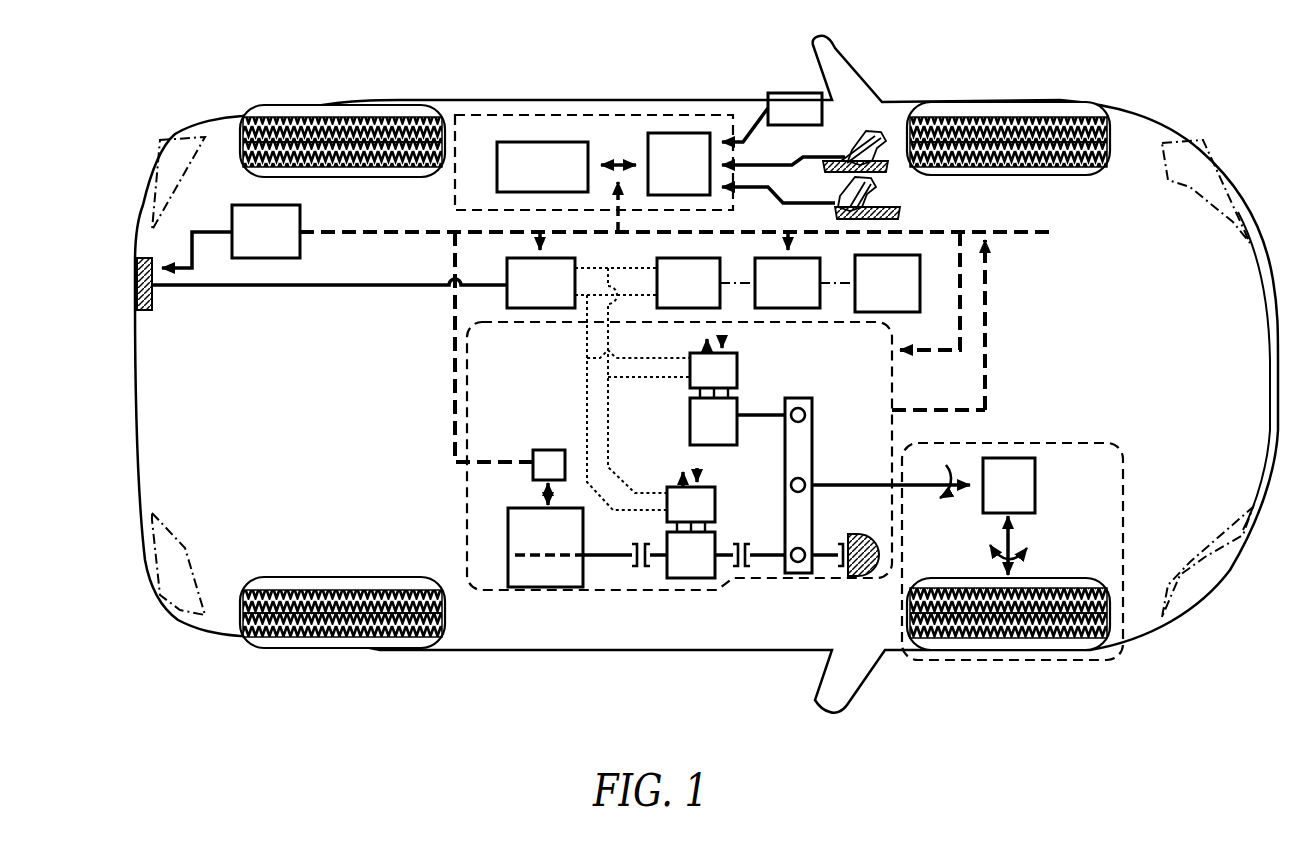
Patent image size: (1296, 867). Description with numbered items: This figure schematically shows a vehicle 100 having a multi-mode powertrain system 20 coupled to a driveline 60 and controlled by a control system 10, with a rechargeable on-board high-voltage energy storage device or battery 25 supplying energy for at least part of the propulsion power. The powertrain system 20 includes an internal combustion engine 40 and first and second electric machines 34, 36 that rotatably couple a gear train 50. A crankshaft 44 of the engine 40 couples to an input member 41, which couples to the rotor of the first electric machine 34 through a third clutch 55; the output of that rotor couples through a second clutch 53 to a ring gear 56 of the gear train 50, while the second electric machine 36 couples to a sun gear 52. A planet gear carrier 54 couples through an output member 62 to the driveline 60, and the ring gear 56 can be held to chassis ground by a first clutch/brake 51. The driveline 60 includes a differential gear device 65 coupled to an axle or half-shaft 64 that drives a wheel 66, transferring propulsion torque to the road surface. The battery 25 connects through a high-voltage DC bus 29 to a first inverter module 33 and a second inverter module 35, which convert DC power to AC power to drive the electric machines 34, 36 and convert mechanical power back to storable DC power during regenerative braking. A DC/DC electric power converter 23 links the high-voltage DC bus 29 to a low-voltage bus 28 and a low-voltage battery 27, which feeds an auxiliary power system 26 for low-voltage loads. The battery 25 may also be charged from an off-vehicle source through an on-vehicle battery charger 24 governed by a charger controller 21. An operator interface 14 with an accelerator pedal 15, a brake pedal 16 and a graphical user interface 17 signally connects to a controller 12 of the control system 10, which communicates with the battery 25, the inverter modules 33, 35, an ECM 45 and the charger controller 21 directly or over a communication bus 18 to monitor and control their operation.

The vehicle 100 is at (706, 374).
The control system 10 is at (594, 162).
The controller 12 is at (542, 167).
The operator interface 14 is at (655, 164).
The accelerator pedal 15 is at (838, 200).
The brake pedal 16 is at (848, 156).
The graphical user interface 17 is at (772, 117).
The communication bus 18 is at (378, 222).
The multi-mode powertrain system 20 is at (901, 371).
The charger controller 21 is at (266, 231).
The DC/DC electric power converter 23 is at (688, 283).
The on-vehicle battery charger 24 is at (137, 268).
The high-voltage energy storage device 25 is at (541, 283).
The auxiliary power system 26 is at (887, 283).
The low-voltage battery 27 is at (787, 283).
The low-voltage bus 28 is at (731, 280).
The high-voltage DC bus 29 is at (646, 293).
The first inverter module 33 is at (718, 512).
The first electric machine 34 is at (686, 580).
The second inverter module 35 is at (740, 372).
The second electric machine 36 is at (722, 447).
The internal combustion engine 40 is at (592, 576).
The input member 41 is at (646, 569).
The crankshaft 44 is at (548, 553).
The ECM 45 is at (552, 449).
The gear train 50 is at (801, 578).
The first clutch/brake 51 is at (848, 569).
The sun gear 52 is at (806, 409).
The second clutch 53 is at (740, 568).
The planet gear carrier 54 is at (806, 479).
The third clutch 55 is at (643, 567).
The ring gear 56 is at (806, 548).
The driveline 60 is at (1047, 432).
The output member 62 is at (922, 482).
The axle 64 is at (1016, 542).
The differential gear device 65 is at (1009, 485).
The wheel 66 is at (981, 570).